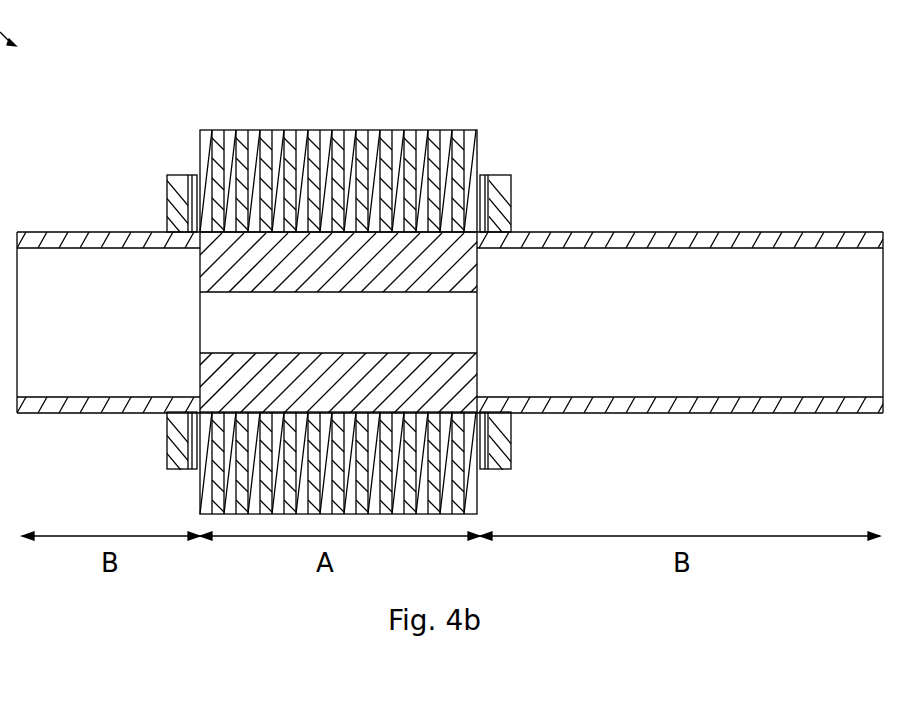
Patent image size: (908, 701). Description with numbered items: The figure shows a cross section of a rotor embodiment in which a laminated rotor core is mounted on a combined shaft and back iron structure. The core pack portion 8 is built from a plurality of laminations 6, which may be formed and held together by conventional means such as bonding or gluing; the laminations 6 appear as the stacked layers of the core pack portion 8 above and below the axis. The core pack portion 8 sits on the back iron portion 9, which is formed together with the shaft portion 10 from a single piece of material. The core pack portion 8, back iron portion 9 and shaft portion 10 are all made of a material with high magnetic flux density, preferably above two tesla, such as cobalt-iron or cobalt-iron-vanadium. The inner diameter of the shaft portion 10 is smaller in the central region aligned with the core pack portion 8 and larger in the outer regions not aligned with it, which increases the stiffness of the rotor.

The laminations 6 is at (362, 130).
The core pack portion 8 is at (390, 157).
The back iron portion 9 is at (453, 277).
The shaft portion 10 is at (477, 244).